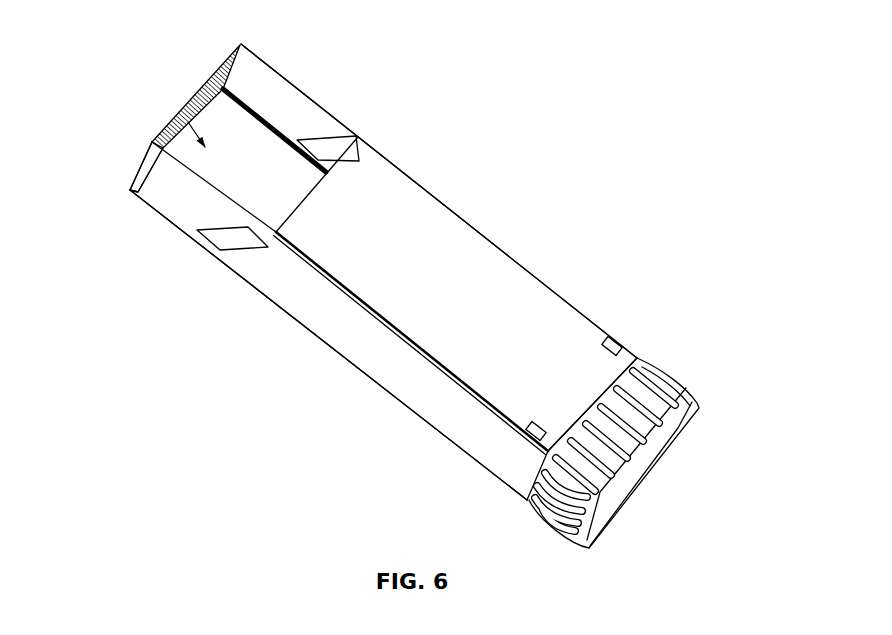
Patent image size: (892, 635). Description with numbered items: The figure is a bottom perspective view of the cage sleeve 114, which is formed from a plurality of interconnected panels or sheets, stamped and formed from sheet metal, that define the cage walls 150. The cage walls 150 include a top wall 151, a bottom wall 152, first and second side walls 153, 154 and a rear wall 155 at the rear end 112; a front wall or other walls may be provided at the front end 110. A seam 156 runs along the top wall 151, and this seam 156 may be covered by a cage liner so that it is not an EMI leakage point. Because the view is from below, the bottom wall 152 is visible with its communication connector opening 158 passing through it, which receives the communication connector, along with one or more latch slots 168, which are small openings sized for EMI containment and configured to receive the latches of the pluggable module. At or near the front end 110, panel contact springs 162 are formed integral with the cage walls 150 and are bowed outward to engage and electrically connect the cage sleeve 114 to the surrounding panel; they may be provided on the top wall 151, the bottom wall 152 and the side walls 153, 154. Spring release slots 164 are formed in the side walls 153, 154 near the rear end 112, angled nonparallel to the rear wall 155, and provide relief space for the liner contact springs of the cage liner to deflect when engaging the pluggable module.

The front end 110 is at (638, 491).
The rear end 112 is at (186, 100).
The cage sleeve 114 is at (538, 168).
The cage walls 150 is at (420, 216).
The top wall 151 is at (248, 152).
The bottom wall 152 is at (482, 273).
The first side wall 153 is at (428, 398).
The second side wall 154 is at (568, 301).
The rear wall 155 is at (213, 77).
The seam 156 is at (188, 122).
The communication connector opening 158 is at (320, 112).
The panel contact springs 162 is at (662, 388).
The spring release slots 164 is at (335, 150).
The latch slots 168 is at (617, 341).